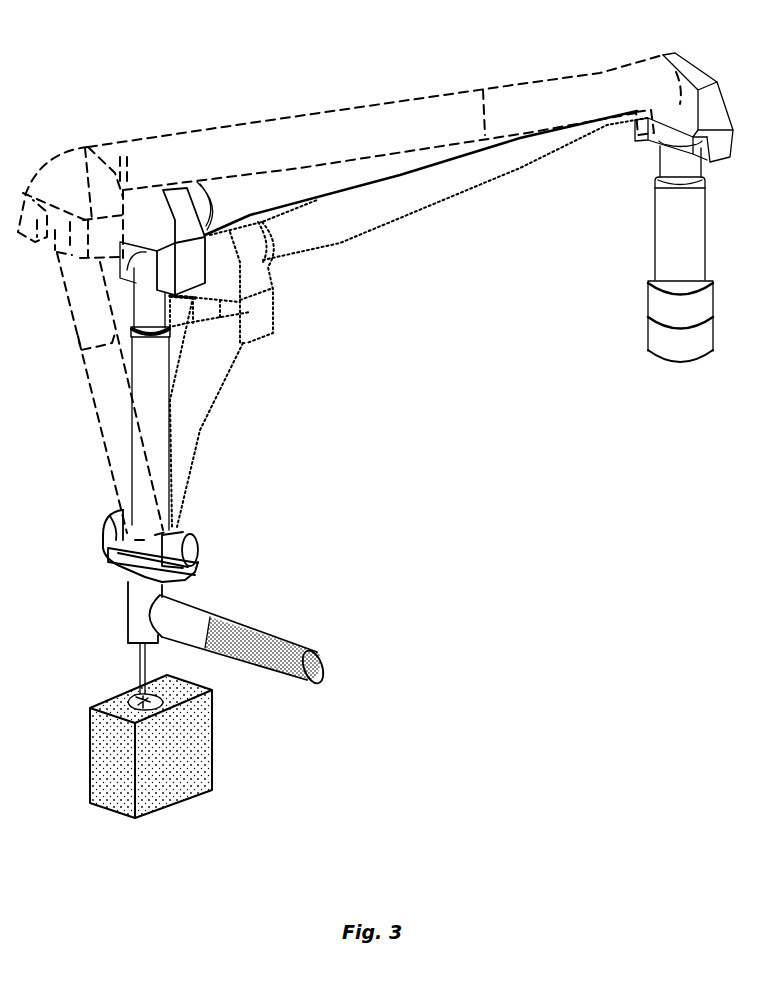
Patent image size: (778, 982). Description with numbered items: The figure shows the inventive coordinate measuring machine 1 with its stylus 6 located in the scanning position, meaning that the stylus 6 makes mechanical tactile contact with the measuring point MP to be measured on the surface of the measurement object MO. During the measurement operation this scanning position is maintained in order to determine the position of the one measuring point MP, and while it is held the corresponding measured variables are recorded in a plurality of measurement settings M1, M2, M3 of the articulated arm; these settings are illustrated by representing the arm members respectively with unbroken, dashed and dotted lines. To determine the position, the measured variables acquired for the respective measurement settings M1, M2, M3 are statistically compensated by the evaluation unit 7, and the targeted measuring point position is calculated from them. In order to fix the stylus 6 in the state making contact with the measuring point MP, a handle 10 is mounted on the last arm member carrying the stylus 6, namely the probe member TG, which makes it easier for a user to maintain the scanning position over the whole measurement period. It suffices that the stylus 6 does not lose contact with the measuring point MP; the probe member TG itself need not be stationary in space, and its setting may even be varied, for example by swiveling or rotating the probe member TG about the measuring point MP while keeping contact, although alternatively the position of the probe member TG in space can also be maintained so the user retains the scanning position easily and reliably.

The coordinate measuring machine 1 is at (143, 57).
The measurement setting M1 is at (342, 110).
The measurement setting M2 is at (497, 150).
The measurement setting M3 is at (340, 243).
The evaluation unit 7 is at (678, 350).
The probe member TG is at (138, 605).
The handle 10 is at (293, 642).
The stylus 6 is at (140, 700).
The measuring point MP is at (152, 703).
The measurement object MO is at (190, 780).